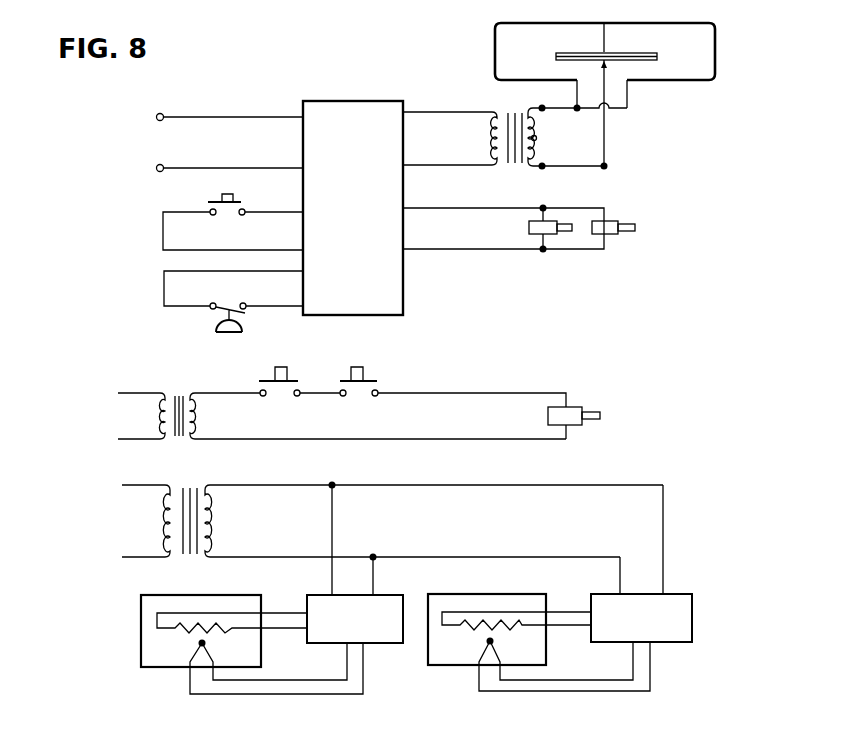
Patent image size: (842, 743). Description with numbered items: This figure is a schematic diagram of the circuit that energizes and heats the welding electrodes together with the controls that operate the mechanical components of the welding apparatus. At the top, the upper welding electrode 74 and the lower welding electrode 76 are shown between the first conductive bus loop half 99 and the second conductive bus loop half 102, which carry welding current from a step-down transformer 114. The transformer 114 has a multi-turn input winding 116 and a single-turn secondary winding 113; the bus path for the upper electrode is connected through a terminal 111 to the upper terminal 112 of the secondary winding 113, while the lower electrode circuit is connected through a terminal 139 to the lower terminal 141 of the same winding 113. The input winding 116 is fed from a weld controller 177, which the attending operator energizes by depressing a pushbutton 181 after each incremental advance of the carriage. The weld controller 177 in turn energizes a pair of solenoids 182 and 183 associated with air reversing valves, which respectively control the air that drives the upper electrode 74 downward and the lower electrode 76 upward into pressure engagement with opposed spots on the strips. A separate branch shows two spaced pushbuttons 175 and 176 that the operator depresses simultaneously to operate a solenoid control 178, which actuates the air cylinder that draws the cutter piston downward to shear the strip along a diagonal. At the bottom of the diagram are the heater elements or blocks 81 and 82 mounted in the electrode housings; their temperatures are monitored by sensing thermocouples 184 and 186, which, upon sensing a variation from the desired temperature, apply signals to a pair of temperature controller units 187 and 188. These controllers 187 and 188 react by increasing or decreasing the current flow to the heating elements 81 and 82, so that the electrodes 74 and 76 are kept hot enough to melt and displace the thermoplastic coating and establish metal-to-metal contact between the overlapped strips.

The first conductive bus loop half 99 is at (490, 46).
The second conductive bus loop half 102 is at (720, 47).
The upper welding electrode 74 is at (601, 48).
The lower welding electrode 76 is at (607, 63).
The upper terminal 112 is at (539, 106).
The terminal 111 is at (576, 111).
The secondary winding 113 is at (538, 140).
The input winding 116 is at (494, 142).
The step-down transformer 114 is at (506, 175).
The lower terminal 141 is at (542, 170).
The terminal 139 is at (607, 166).
The weld controller 177 is at (403, 297).
The pushbutton 181 is at (208, 202).
The solenoid 182 is at (529, 227).
The solenoid 183 is at (618, 233).
The pushbutton 175 is at (259, 381).
The pushbutton 176 is at (377, 381).
The solenoid control 178 is at (583, 410).
The heater element 81 is at (186, 622).
The heater element 82 is at (470, 622).
The sensing thermocouple 184 is at (200, 646).
The sensing thermocouple 186 is at (488, 644).
The temperature controller unit 187 is at (377, 645).
The temperature controller unit 188 is at (663, 645).